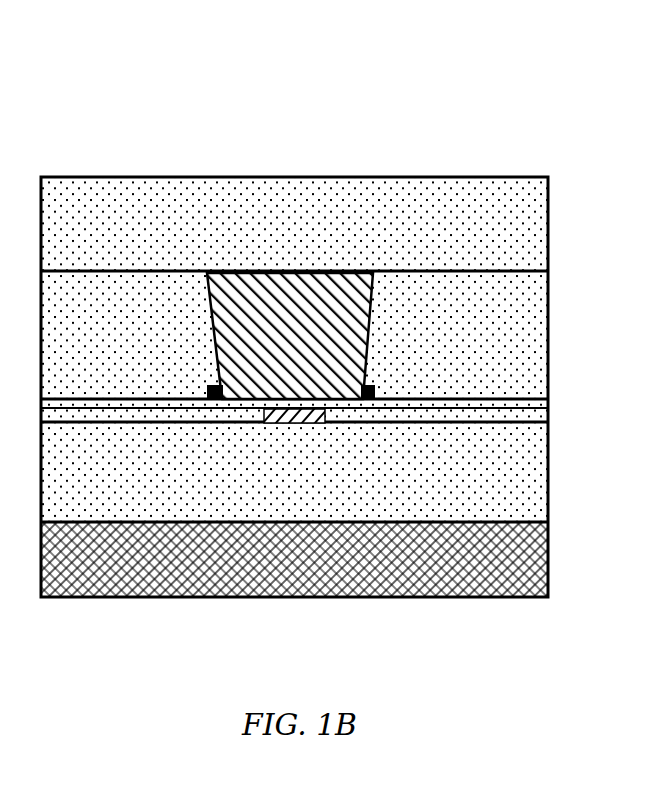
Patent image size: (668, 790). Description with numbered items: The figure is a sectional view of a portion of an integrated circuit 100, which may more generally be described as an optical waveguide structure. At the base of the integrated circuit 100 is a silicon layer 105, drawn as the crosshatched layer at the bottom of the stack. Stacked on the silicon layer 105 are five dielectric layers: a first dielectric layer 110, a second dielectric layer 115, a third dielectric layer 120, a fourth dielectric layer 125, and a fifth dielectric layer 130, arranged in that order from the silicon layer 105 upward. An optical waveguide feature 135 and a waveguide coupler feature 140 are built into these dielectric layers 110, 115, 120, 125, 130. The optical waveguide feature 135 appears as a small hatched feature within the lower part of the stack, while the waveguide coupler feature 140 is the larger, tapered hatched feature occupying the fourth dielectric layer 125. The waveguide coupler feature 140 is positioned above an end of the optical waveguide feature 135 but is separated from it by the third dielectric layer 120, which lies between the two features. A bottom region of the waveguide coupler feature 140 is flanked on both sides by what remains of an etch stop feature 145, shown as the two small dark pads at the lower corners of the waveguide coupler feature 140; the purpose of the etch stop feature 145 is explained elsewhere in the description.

The integrated circuit 100 is at (172, 100).
The silicon layer 105 is at (548, 556).
The first dielectric layer 110 is at (532, 485).
The second dielectric layer 115 is at (530, 417).
The third dielectric layer 120 is at (535, 403).
The fourth dielectric layer 125 is at (535, 342).
The fifth dielectric layer 130 is at (530, 213).
The optical waveguide feature 135 is at (288, 423).
The waveguide coupler feature 140 is at (350, 328).
The etch stop feature 145 is at (375, 398).